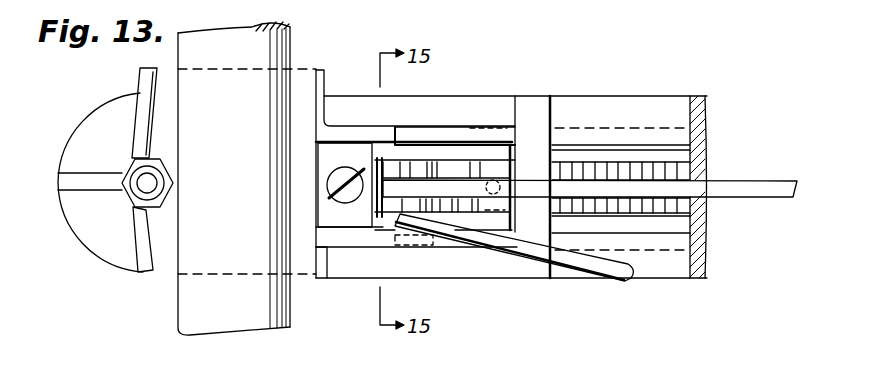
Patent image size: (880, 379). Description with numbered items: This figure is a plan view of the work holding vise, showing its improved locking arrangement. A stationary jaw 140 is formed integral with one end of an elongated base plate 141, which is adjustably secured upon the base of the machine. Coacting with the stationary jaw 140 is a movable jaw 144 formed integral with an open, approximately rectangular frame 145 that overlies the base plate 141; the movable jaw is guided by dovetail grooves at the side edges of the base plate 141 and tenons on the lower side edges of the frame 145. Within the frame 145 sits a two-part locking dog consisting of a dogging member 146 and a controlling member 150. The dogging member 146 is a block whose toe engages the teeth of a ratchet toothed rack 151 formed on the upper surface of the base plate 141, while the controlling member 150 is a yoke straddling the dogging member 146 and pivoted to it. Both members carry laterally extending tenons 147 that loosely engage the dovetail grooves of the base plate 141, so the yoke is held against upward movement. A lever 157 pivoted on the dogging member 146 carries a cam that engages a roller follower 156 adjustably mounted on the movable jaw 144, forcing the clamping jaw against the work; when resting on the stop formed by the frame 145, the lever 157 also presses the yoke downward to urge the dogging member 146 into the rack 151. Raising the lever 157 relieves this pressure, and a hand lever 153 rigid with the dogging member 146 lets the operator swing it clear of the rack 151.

The stationary jaw 140 is at (162, 84).
The base plate 141 is at (662, 115).
The movable jaw 144 is at (297, 83).
The frame 145 is at (458, 133).
The dogging member 146 is at (435, 150).
The tenons 147 is at (405, 150).
The controlling member 150 is at (500, 158).
The ratchet toothed rack 151 is at (673, 207).
The hand lever 153 is at (587, 262).
The roller follower 156 is at (378, 192).
The lever 157 is at (762, 187).